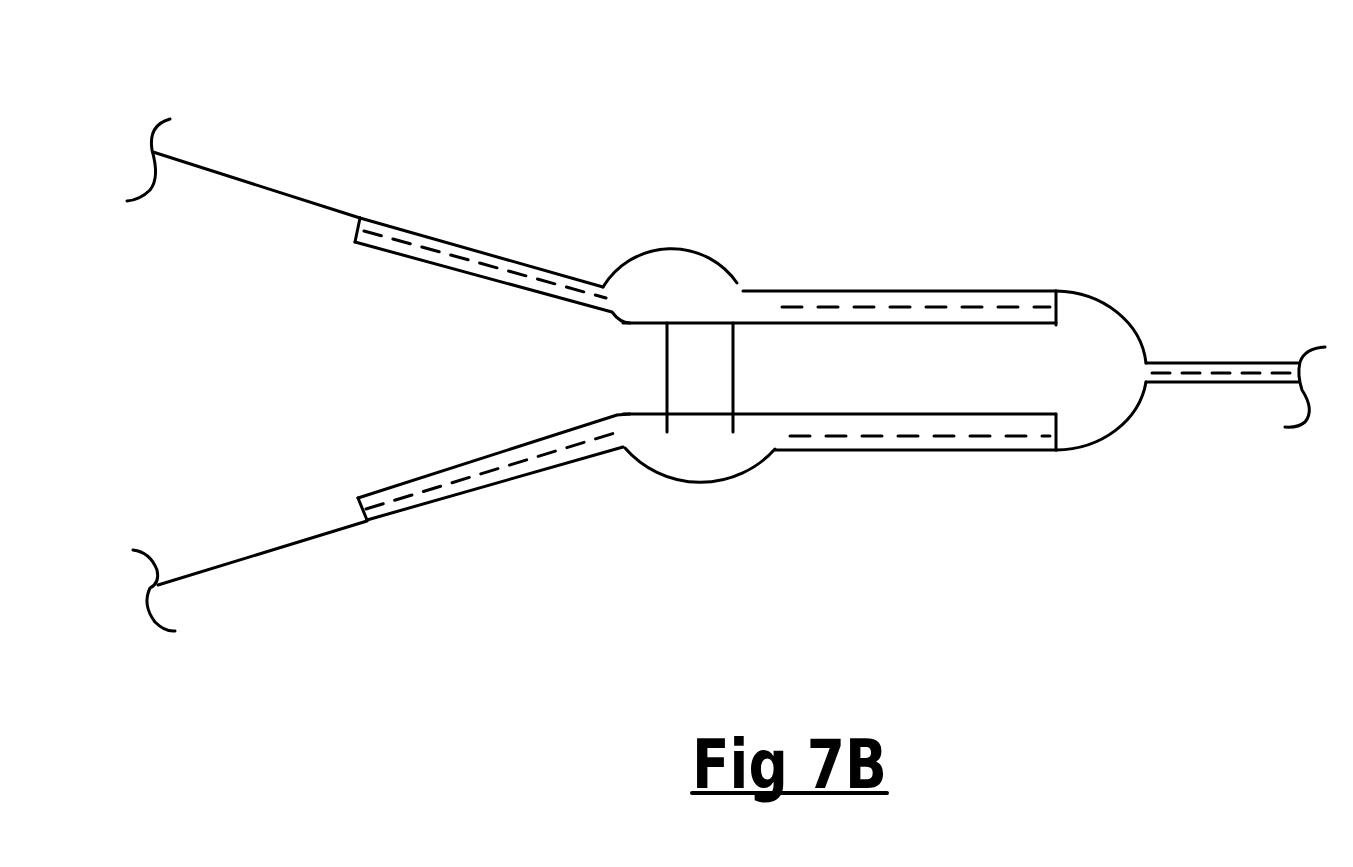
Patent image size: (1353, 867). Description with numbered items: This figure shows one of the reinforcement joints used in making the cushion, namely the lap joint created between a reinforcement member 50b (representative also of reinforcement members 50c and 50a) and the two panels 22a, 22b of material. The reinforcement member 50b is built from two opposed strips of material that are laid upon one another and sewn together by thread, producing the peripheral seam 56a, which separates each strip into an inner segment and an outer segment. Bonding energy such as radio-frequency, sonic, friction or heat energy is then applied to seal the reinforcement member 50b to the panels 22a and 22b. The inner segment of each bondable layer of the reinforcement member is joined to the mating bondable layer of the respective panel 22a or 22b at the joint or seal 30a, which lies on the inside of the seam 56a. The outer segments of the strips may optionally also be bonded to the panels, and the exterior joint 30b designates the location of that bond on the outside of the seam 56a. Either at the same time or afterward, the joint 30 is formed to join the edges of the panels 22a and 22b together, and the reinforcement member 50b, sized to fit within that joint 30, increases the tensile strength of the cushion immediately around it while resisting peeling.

The reinforcement member 50b is at (869, 280).
The reinforcement member 50c is at (874, 366).
The reinforcement member 50a is at (645, 393).
The peripheral seam 56a is at (697, 370).
The panel 22a is at (512, 259).
The panel 22b is at (510, 482).
The joint or seal 30a is at (403, 242).
The exterior joint 30b is at (418, 497).
The joint or seal 30 is at (1200, 377).